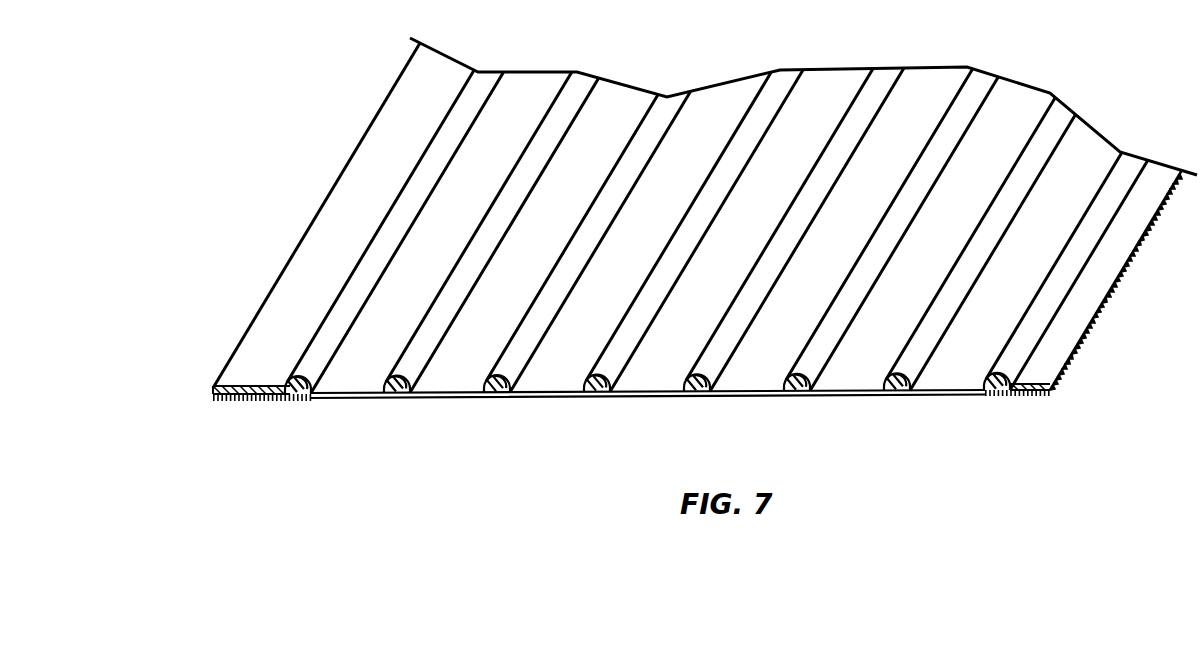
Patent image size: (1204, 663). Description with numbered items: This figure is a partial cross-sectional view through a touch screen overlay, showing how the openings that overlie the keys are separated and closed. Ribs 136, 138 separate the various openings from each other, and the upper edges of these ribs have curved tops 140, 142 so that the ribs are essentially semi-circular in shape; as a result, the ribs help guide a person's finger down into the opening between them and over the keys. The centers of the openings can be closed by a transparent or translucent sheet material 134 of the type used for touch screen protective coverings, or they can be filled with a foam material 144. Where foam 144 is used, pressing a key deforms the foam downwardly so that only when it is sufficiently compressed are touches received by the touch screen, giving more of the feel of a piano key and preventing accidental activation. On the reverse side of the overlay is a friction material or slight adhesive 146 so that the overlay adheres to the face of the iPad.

The transparent or translucent sheet material 134 is at (657, 366).
The rib 136 is at (397, 394).
The rib 138 is at (497, 394).
The curved top 140 is at (418, 358).
The curved top 142 is at (513, 356).
The foam material 144 is at (252, 402).
The friction material or slight adhesive 146 is at (752, 398).